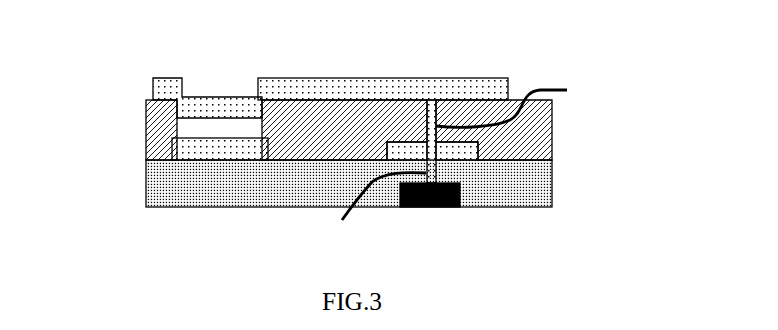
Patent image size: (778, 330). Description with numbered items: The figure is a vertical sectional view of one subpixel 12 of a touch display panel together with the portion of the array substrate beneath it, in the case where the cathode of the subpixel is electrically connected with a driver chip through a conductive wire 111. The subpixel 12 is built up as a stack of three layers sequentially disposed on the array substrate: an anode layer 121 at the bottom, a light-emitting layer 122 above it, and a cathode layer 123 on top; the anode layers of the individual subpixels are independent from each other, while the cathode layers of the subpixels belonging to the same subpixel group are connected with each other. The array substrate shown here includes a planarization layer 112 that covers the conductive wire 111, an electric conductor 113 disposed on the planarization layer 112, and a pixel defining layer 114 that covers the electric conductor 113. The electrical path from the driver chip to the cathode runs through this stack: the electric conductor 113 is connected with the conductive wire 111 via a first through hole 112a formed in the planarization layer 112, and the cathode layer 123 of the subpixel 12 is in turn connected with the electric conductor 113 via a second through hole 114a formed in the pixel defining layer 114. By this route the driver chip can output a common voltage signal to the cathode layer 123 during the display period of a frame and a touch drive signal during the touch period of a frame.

The subpixel 12 is at (267, 120).
The anode layer 121 is at (170, 154).
The light-emitting layer 122 is at (147, 123).
The cathode layer 123 is at (152, 85).
The conductive wire 111 is at (462, 190).
The planarization layer 112 is at (552, 175).
The first through hole 112a is at (375, 212).
The electric conductor 113 is at (405, 127).
The pixel defining layer 114 is at (552, 122).
The second through hole 114a is at (531, 105).